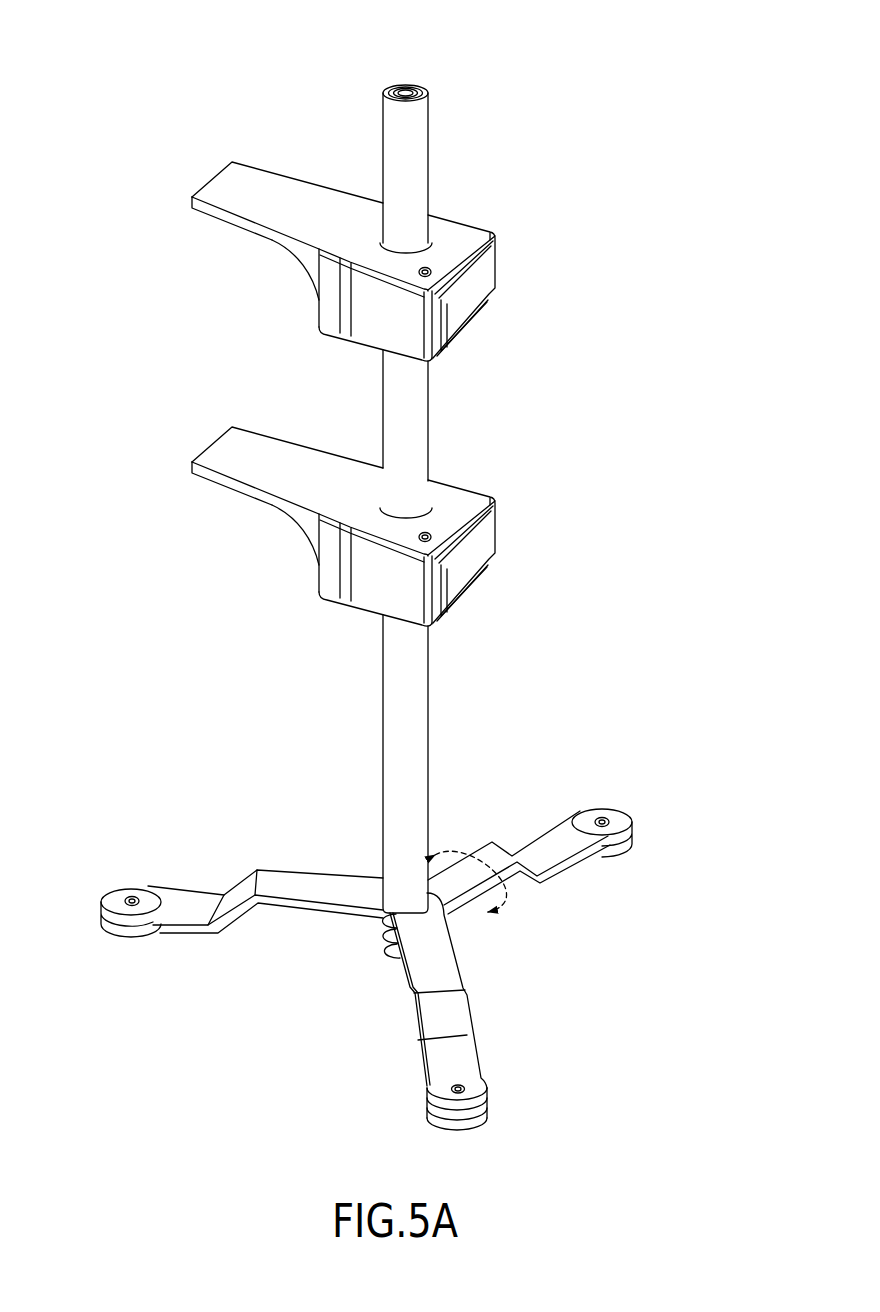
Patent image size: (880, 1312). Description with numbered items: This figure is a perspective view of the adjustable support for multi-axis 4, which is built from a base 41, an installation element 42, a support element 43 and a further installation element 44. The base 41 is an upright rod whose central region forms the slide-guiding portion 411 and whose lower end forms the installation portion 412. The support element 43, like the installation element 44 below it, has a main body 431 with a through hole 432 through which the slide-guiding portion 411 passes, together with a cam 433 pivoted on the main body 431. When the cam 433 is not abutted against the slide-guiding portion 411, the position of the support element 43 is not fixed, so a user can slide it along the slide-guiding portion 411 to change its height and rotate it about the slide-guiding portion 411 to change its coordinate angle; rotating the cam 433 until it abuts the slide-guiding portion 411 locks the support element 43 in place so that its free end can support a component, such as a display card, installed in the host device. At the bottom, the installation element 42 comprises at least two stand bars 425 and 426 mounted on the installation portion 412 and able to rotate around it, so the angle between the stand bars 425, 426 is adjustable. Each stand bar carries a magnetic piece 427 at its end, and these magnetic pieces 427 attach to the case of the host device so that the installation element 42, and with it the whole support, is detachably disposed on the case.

The adjustable support for multi-axis 4 is at (150, 48).
The base 41 is at (452, 489).
The slide-guiding portion 411 is at (413, 178).
The installation portion 412 is at (380, 940).
The installation element 42 is at (310, 882).
The stand bar 425 is at (440, 970).
The stand bar 426 is at (558, 843).
The magnetic piece 427 is at (130, 933).
The support element 43 is at (338, 253).
The main body 431 is at (355, 303).
The through hole 432 is at (437, 232).
The cam 433 is at (453, 307).
The installation element 44 is at (227, 452).